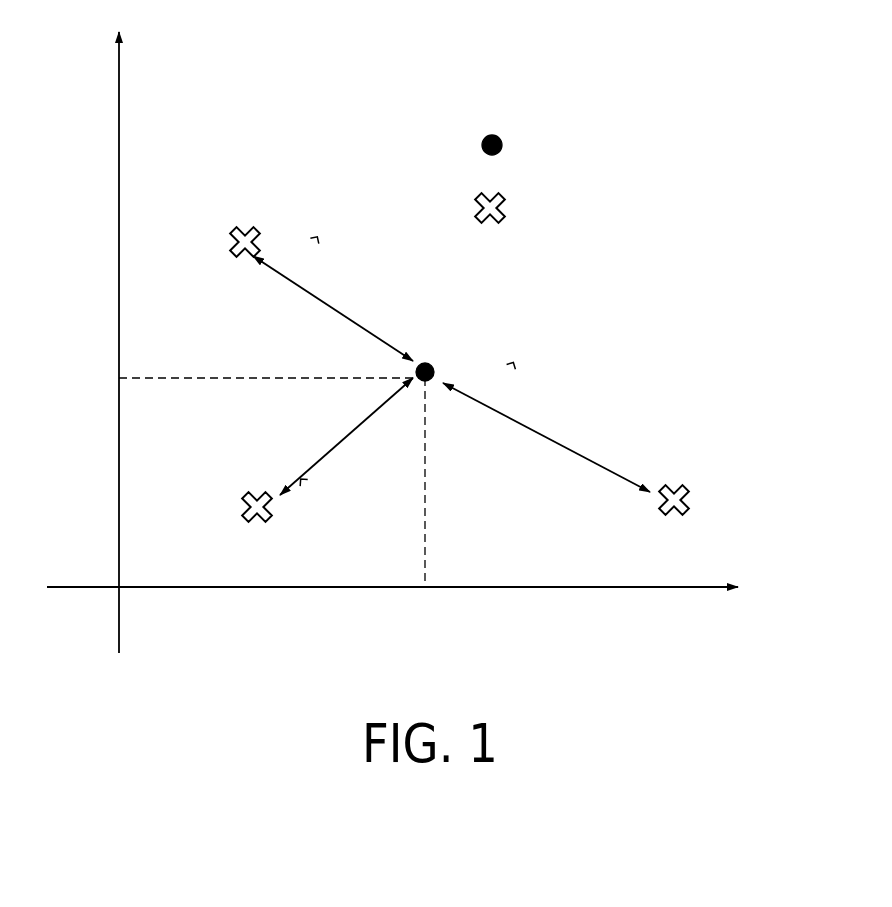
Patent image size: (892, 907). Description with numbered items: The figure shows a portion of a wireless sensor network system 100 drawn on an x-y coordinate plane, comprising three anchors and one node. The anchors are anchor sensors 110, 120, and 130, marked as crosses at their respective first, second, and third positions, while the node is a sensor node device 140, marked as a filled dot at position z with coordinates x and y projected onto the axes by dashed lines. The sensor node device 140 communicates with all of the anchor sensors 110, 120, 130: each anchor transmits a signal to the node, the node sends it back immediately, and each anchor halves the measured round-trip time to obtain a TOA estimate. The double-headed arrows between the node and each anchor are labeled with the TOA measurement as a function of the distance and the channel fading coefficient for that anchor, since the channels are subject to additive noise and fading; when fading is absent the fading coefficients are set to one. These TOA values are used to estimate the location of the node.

The wireless sensor network system 100 is at (436, 74).
The anchor sensor 110 is at (246, 226).
The anchor sensor 120 is at (247, 497).
The anchor sensor 130 is at (690, 486).
The sensor node device 140 is at (437, 367).